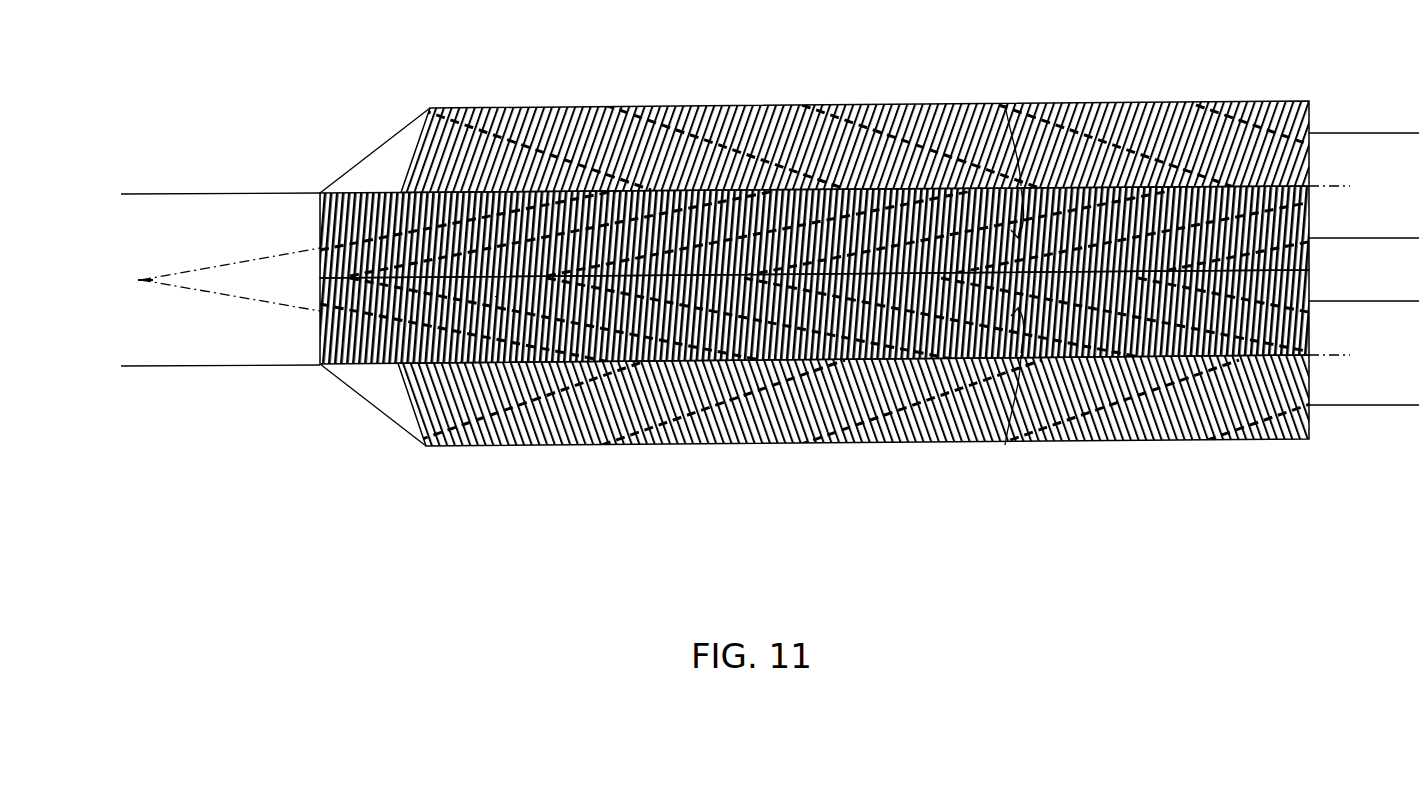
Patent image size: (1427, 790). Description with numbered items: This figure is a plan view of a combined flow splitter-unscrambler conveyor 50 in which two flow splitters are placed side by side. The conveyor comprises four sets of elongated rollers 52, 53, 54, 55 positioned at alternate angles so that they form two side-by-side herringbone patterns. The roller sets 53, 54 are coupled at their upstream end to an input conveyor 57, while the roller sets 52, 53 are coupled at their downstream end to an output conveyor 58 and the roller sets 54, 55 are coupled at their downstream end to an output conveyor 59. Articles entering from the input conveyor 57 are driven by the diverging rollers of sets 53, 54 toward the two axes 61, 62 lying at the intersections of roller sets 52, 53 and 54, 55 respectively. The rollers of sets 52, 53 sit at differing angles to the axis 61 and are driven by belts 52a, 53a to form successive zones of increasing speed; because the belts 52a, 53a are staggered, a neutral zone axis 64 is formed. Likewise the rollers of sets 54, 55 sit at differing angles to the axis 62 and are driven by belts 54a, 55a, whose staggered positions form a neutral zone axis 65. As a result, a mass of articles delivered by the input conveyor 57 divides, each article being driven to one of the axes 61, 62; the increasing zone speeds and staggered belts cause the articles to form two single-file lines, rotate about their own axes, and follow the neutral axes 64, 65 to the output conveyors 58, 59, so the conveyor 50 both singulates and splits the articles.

The combined flow splitter-unscrambler conveyor 50 is at (448, 512).
The roller set 52 is at (437, 140).
The belt 52a is at (858, 96).
The roller set 53 is at (345, 215).
The belt 53a is at (438, 236).
The roller set 54 is at (340, 328).
The belt 54a is at (438, 287).
The roller set 55 is at (417, 432).
The belt 55a is at (858, 437).
The input conveyor 57 is at (150, 333).
The output conveyor 58 is at (1392, 150).
The output conveyor 59 is at (1408, 340).
The axis 61 is at (368, 184).
The axis 62 is at (368, 357).
The neutral zone axis 64 is at (997, 97).
The neutral zone axis 65 is at (997, 437).